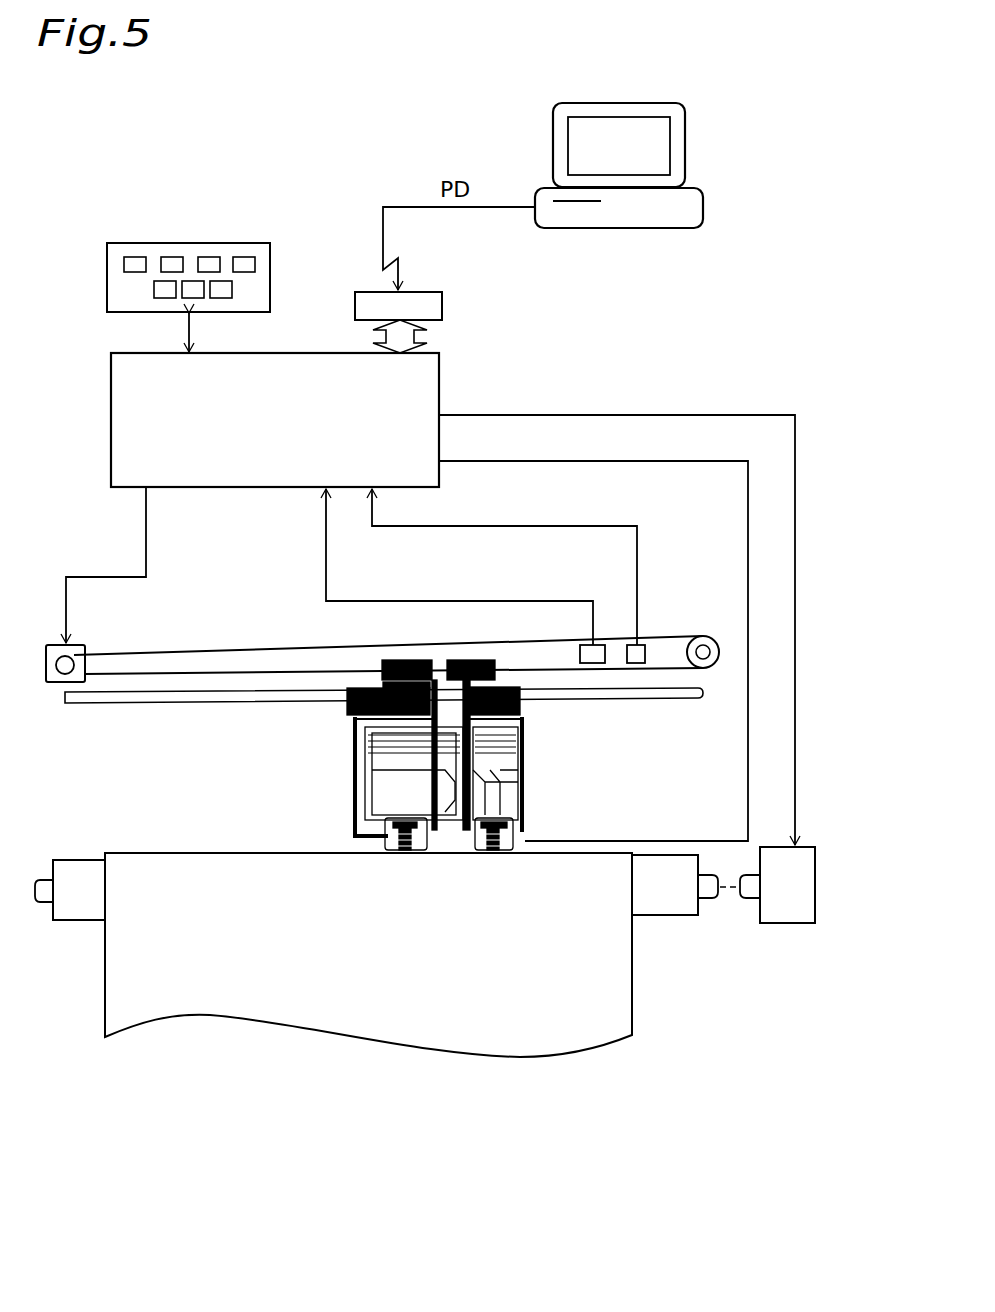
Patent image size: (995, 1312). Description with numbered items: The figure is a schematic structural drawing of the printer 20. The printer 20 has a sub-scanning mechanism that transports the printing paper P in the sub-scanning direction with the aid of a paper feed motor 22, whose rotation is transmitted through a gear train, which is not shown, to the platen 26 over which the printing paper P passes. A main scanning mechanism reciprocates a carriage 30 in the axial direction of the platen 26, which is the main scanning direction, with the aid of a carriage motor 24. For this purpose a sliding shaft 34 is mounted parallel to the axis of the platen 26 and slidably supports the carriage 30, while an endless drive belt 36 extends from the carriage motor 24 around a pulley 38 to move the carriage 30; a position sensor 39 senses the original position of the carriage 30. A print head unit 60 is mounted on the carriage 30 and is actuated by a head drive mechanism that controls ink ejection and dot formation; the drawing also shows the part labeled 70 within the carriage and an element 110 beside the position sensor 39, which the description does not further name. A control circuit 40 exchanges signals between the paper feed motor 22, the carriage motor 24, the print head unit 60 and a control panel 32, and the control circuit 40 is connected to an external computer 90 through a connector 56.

The printer 20 is at (563, 1137).
The paper feed motor 22 is at (783, 924).
The carriage motor 24 is at (57, 684).
The platen 26 is at (672, 916).
The carriage 30 is at (458, 755).
The control panel 32 is at (245, 241).
The sliding shaft 34 is at (237, 703).
The endless drive belt 36 is at (262, 648).
The pulley 38 is at (698, 638).
The position sensor 39 is at (627, 655).
The control circuit 40 is at (439, 377).
The connector 56 is at (442, 305).
The print head unit 60 is at (527, 828).
The print head 70 is at (380, 788).
The computer 90 is at (687, 143).
The sensor 110 is at (580, 655).
The printing paper P is at (632, 1003).